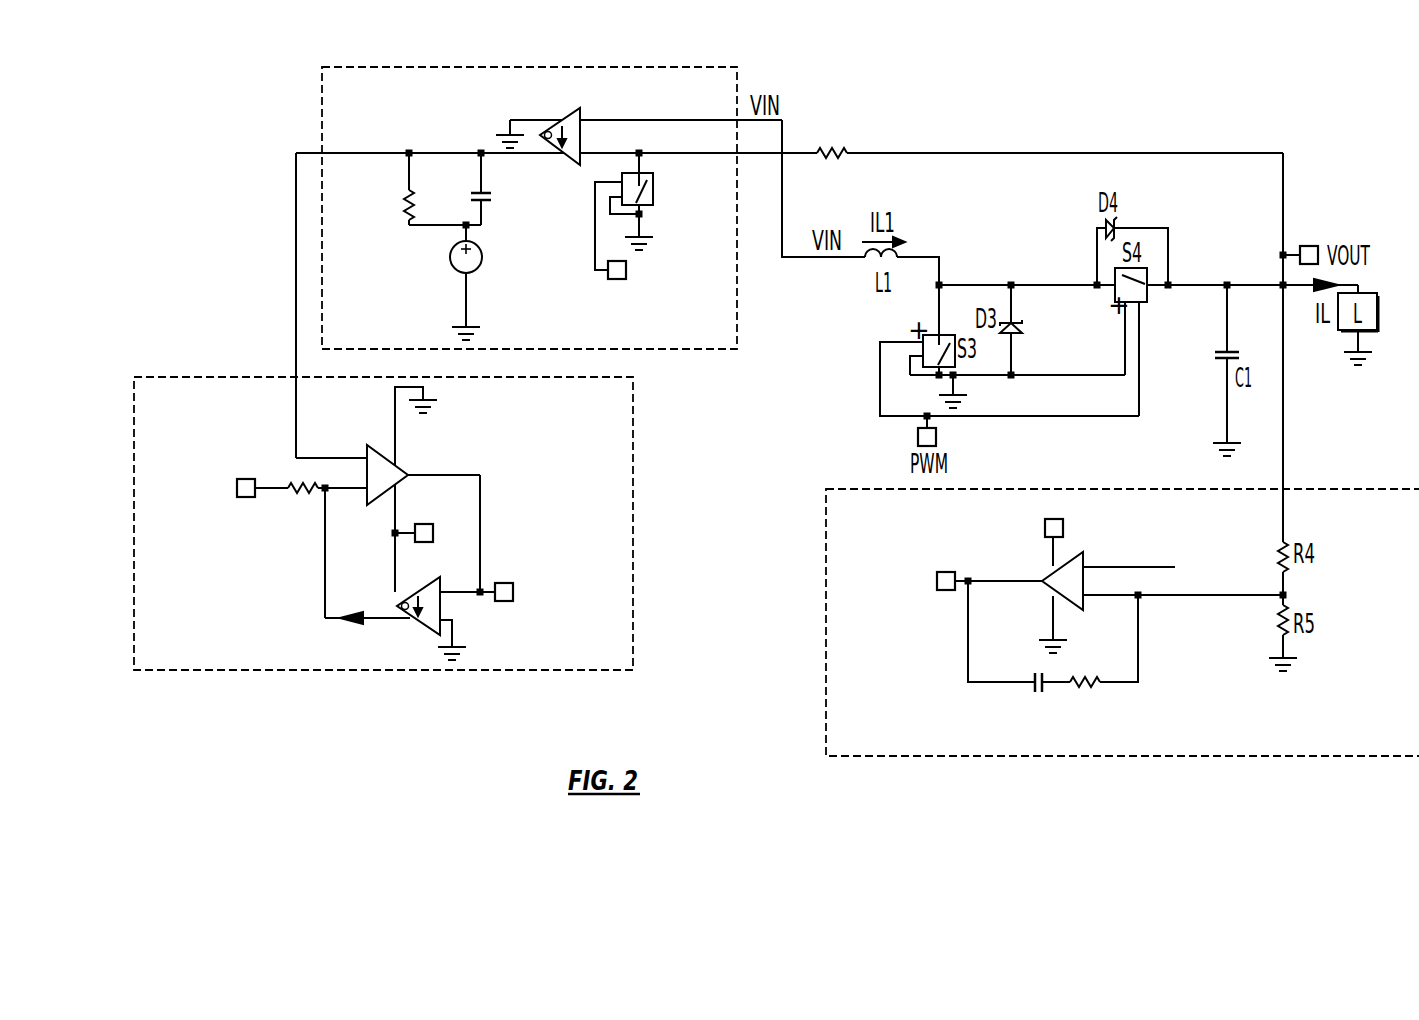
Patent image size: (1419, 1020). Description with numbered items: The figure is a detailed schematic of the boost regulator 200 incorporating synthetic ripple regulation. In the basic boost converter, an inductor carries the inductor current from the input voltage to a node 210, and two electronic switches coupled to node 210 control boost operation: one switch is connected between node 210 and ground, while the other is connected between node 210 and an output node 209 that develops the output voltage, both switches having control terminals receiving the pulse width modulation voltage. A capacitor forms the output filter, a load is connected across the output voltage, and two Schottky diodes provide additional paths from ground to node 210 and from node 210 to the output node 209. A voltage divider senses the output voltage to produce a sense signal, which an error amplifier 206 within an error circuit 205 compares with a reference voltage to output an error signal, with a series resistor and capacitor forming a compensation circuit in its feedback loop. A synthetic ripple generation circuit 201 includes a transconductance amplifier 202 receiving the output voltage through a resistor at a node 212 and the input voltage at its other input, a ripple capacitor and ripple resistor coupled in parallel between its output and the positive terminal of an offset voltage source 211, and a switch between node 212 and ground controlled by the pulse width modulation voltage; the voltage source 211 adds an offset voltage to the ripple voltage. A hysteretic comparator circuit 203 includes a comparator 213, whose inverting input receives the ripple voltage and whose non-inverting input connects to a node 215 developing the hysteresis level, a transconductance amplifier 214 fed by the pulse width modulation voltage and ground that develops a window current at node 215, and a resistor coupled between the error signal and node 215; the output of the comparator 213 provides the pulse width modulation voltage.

The boost regulator 200 is at (1068, 98).
The synthetic ripple generation circuit 201 is at (363, 97).
The transconductance amplifier 202 is at (569, 109).
The hysteretic comparator circuit 203 is at (177, 410).
The error circuit 205 is at (867, 523).
The error amplifier 206 is at (1083, 557).
The output node 209 is at (1284, 153).
The node 210 is at (942, 284).
The offset voltage source 211 is at (455, 267).
The node 212 is at (641, 151).
The comparator 213 is at (368, 458).
The transconductance amplifier 214 is at (442, 605).
The node 215 is at (328, 490).